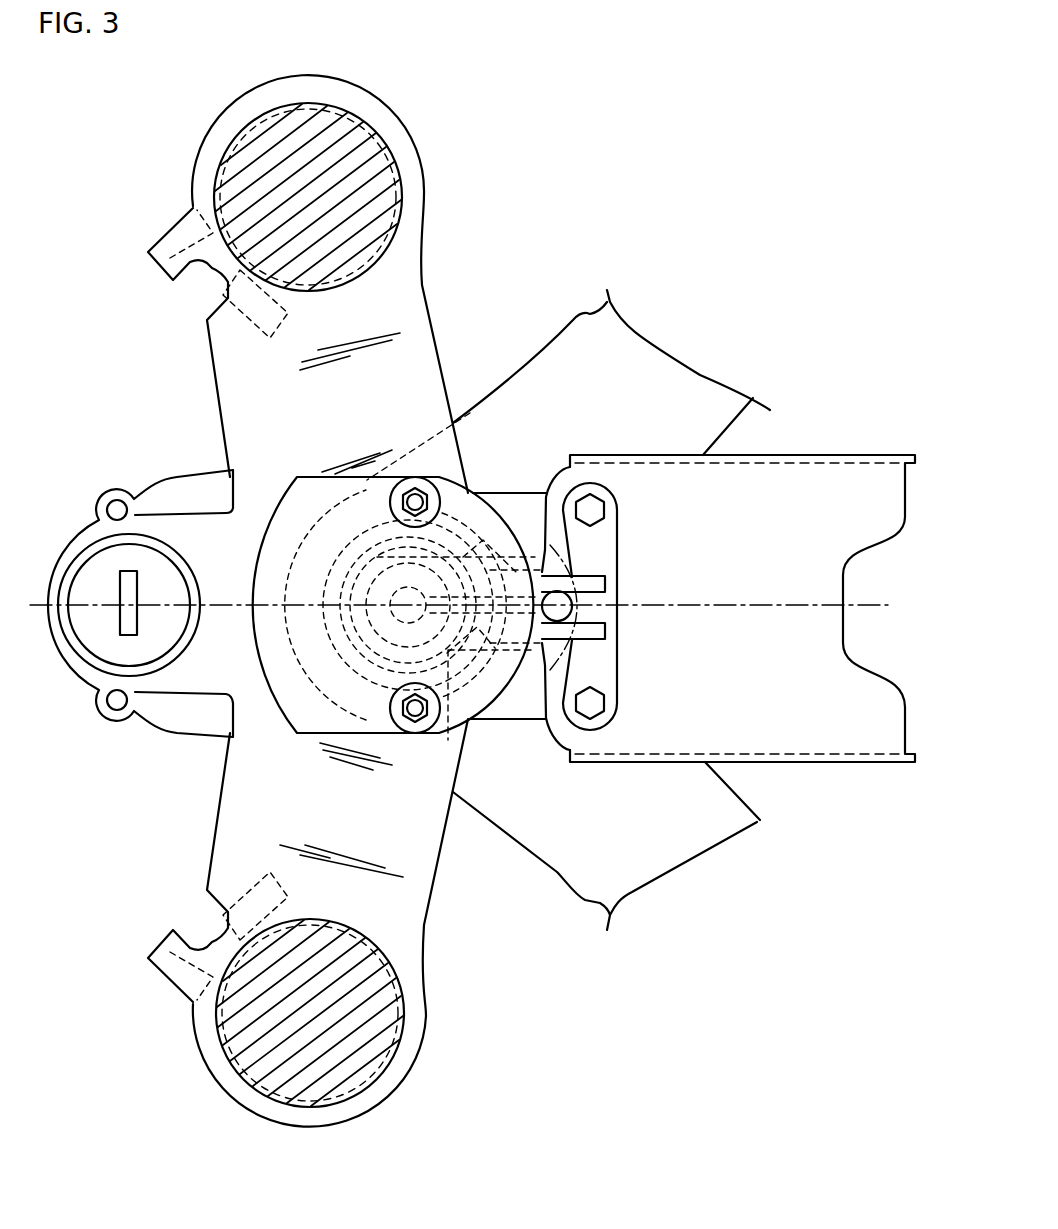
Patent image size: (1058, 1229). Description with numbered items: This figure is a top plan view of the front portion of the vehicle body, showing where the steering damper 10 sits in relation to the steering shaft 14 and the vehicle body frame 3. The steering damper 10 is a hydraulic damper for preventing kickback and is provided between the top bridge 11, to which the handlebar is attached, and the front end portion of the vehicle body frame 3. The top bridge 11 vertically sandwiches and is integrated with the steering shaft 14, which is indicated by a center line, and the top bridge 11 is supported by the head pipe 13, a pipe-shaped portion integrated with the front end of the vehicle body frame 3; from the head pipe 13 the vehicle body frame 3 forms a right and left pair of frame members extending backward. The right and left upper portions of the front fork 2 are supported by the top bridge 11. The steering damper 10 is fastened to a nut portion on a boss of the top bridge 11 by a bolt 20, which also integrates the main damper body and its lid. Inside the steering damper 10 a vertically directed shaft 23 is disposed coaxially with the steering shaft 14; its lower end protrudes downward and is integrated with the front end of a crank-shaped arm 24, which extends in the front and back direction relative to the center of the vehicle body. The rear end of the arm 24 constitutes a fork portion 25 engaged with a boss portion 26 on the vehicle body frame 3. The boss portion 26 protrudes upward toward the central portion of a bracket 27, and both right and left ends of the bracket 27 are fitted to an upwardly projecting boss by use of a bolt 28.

The front fork 2 is at (267, 152).
The vehicle body frame 3 is at (580, 342).
The steering damper 10 is at (283, 485).
The top bridge 11 is at (225, 357).
The head pipe 13 is at (320, 640).
The steering shaft 14 is at (340, 653).
The bolt 20 is at (417, 495).
The shaft 23 is at (407, 595).
The arm 24 is at (450, 735).
The fork portion 25 is at (597, 577).
The boss portion 26 is at (562, 612).
The bracket 27 is at (603, 648).
The bolt 28 is at (597, 510).